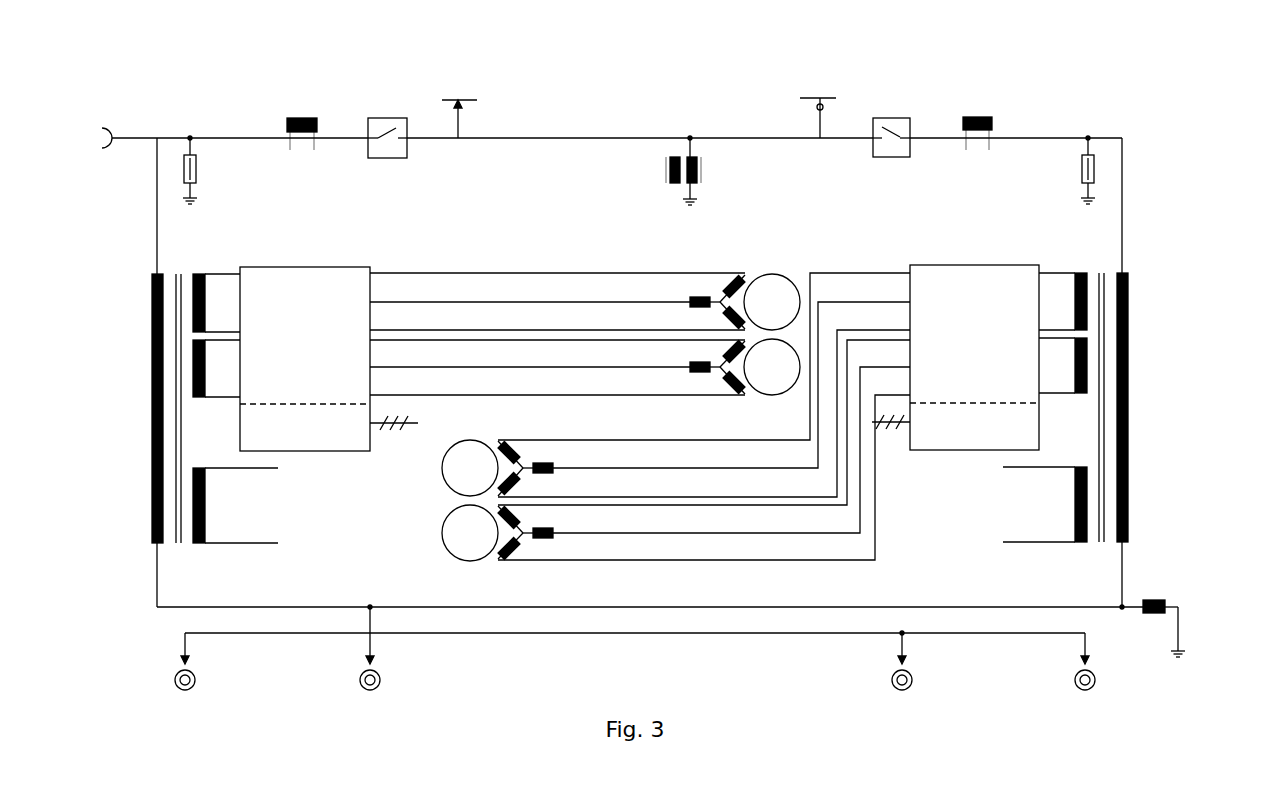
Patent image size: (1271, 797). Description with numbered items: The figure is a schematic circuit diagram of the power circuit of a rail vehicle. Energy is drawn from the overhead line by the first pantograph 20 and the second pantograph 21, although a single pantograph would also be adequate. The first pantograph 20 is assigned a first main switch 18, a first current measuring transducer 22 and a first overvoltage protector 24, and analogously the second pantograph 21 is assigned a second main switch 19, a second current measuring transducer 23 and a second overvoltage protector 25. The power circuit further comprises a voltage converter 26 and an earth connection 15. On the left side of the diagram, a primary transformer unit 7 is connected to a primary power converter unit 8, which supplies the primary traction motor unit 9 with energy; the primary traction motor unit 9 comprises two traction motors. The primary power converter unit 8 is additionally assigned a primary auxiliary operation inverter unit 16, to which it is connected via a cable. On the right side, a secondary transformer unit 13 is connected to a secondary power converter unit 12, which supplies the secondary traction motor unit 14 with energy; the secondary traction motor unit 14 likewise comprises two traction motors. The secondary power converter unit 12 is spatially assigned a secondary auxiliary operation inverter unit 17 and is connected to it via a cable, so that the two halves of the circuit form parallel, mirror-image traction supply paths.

The primary transformer unit 7 is at (150, 326).
The primary power converter unit 8 is at (302, 266).
The primary traction motor unit 9 is at (778, 271).
The secondary power converter unit 12 is at (951, 265).
The secondary transformer unit 13 is at (1128, 320).
The secondary traction motor unit 14 is at (441, 493).
The earth connection 15 is at (1182, 632).
The primary auxiliary operation inverter unit 16 is at (260, 425).
The secondary auxiliary operation inverter unit 17 is at (1003, 422).
The first main switch 18 is at (381, 117).
The second main switch 19 is at (902, 117).
The first pantograph 20 is at (477, 100).
The second pantograph 21 is at (820, 98).
The first current measuring transducer 22 is at (306, 117).
The second current measuring transducer 23 is at (980, 115).
The first overvoltage protector 24 is at (190, 137).
The second overvoltage protector 25 is at (1089, 137).
The voltage converter 26 is at (690, 156).